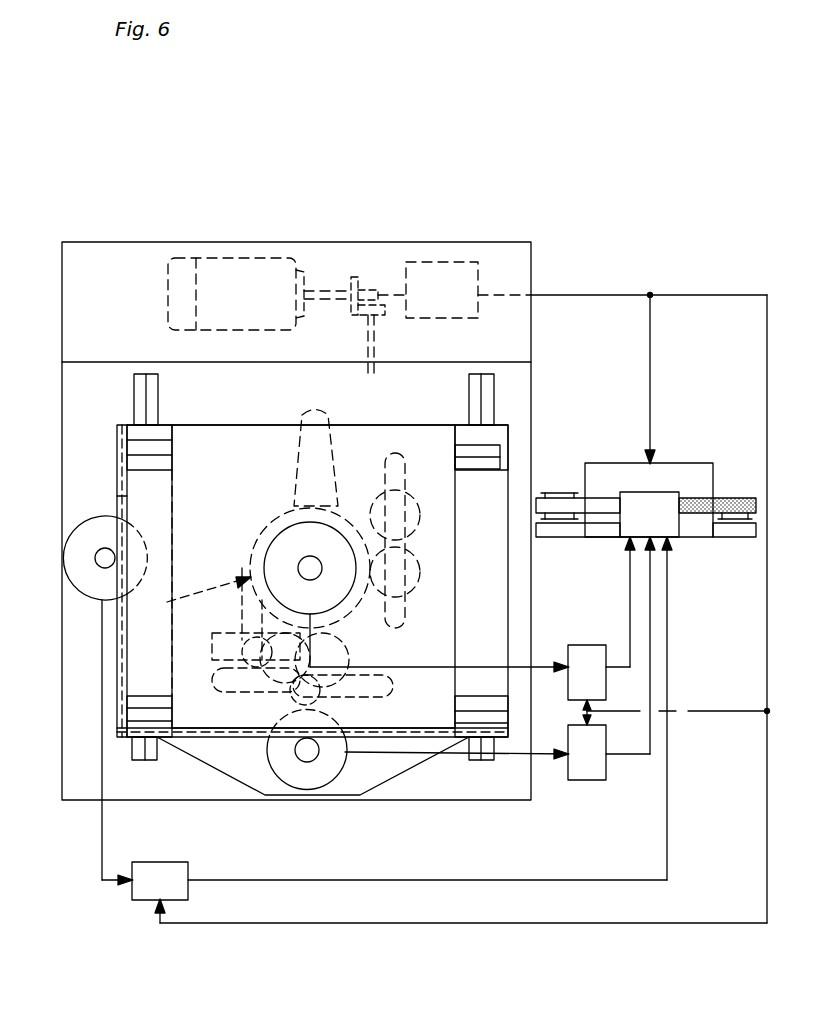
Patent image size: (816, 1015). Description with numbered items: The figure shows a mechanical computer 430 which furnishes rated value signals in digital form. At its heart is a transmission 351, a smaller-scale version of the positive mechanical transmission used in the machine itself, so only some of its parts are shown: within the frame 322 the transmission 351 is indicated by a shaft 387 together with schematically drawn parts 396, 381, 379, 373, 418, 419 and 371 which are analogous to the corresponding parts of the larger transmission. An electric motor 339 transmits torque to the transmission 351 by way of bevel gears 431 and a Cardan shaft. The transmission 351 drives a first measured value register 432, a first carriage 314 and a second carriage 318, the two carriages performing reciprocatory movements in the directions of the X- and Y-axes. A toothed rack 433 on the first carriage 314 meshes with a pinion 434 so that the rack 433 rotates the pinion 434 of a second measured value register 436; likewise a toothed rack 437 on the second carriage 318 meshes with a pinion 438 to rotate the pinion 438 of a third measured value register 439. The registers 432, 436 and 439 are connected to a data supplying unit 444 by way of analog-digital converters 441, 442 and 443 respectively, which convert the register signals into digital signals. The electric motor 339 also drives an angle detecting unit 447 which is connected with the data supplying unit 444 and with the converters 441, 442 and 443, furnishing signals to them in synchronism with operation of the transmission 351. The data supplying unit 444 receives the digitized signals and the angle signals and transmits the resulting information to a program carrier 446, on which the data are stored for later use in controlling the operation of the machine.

The mechanical computer 430 is at (343, 202).
The frame 322 is at (102, 484).
The first carriage 314 is at (216, 486).
The second carriage 318 is at (155, 671).
The electric motor 339 is at (228, 272).
The bevel gears 431 is at (381, 282).
The angle detecting unit 447 is at (465, 270).
The data supplying unit 444 is at (672, 530).
The program carrier 446 is at (703, 500).
The analog-digital converter 441 is at (585, 648).
The analog-digital converter 442 is at (585, 780).
The analog-digital converter 443 is at (152, 890).
The third measured value register 439 is at (77, 573).
The pinion 438 is at (97, 557).
The toothed rack 437 is at (120, 496).
The transmission 351 is at (190, 598).
The first measured value register 432 is at (325, 535).
The shaft 387 is at (305, 566).
The arm 396 is at (308, 470).
The guide bar 381 is at (406, 468).
The roller 379 is at (412, 499).
The roller 373 is at (405, 578).
The clamp unit 418 is at (213, 645).
The clamp link 419 is at (245, 628).
The lever 371 is at (385, 663).
The toothed rack 433 is at (255, 742).
The pinion 434 is at (307, 752).
The second measured value register 436 is at (345, 770).